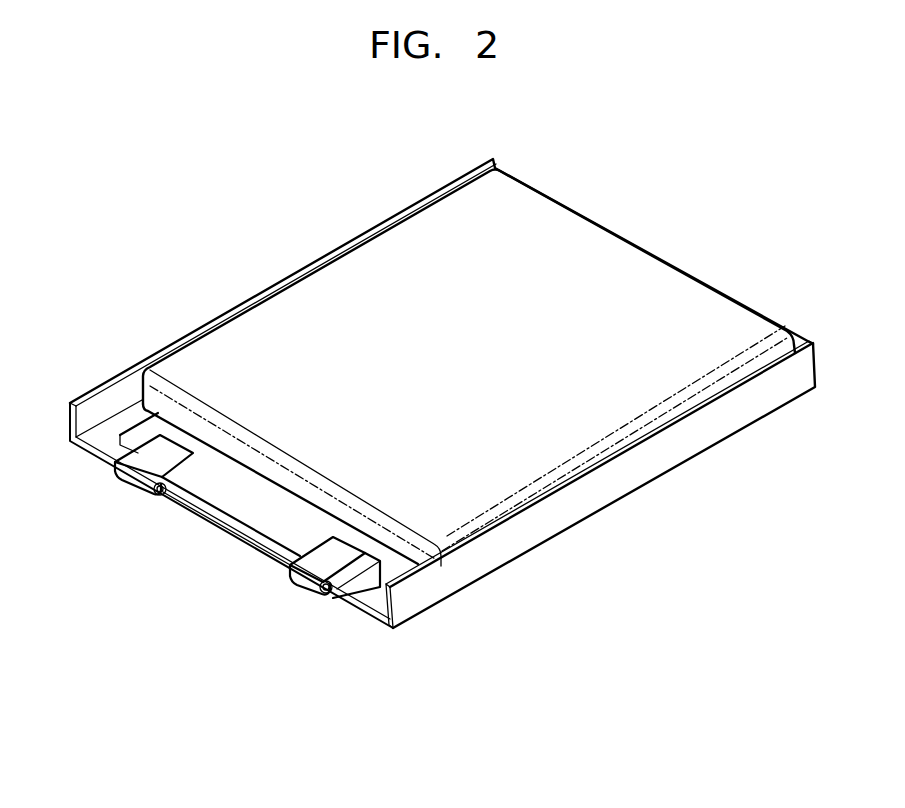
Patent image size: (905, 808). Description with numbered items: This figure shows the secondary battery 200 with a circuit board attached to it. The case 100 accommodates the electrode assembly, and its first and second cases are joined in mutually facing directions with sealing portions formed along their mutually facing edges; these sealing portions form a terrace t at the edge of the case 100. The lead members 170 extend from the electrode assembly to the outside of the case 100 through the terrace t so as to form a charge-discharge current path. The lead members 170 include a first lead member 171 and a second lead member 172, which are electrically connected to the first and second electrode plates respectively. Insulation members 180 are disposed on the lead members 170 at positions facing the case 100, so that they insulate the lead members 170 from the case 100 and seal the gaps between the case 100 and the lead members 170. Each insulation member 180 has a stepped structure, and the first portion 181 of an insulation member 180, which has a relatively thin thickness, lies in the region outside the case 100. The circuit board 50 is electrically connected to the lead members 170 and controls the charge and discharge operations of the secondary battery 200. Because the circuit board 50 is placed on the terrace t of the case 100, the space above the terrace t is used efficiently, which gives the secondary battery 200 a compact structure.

The case 100 is at (133, 369).
The lead members 170 is at (412, 444).
The first lead member 171 is at (170, 450).
The second lead member 172 is at (345, 548).
The insulation members 180 is at (308, 590).
The first portion 181 is at (186, 482).
The circuit board 50 is at (252, 504).
The terrace t is at (378, 606).
The secondary battery 200 is at (118, 634).